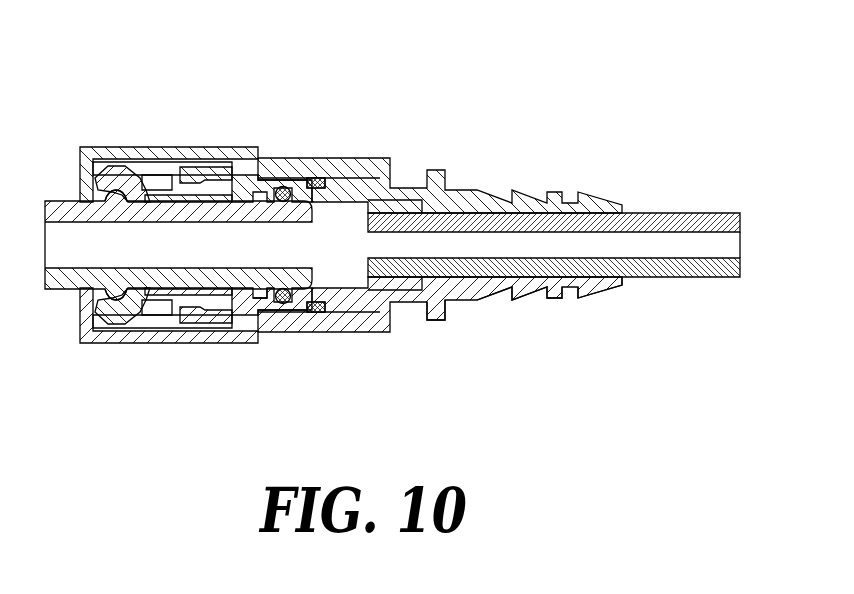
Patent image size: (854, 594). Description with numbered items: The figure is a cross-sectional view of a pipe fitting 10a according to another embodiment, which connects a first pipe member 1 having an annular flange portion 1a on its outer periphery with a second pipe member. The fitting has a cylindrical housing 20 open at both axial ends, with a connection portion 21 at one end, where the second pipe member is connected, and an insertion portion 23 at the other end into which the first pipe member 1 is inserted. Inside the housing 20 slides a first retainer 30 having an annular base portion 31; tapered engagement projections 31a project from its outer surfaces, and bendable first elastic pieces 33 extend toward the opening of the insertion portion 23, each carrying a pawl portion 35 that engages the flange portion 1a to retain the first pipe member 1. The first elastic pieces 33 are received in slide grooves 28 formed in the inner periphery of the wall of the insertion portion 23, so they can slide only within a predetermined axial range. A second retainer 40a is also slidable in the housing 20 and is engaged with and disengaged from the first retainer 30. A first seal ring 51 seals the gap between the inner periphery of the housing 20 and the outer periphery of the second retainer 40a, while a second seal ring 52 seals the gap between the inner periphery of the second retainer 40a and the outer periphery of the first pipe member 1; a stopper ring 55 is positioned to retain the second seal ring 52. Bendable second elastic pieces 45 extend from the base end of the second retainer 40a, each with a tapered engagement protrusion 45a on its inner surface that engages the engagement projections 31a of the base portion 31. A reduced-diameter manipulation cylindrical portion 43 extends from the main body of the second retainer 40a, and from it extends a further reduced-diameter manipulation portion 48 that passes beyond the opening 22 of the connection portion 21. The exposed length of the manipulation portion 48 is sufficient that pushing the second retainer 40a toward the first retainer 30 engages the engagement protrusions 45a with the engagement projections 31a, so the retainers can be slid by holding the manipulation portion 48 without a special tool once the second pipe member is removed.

The first pipe member 1 is at (53, 200).
The flange portion 1a is at (131, 147).
The pipe fitting 10a is at (290, 152).
The housing 20 is at (393, 156).
The connection portion 21 is at (533, 300).
The opening 22 is at (614, 288).
The insertion portion 23 is at (80, 290).
The slide groove 28 is at (106, 318).
The first retainer 30 is at (98, 325).
The base portion 31 is at (213, 343).
The engagement projection 31a is at (203, 147).
The first elastic piece 33 is at (172, 147).
The pawl portion 35 is at (108, 147).
The second retainer 40a is at (348, 157).
The manipulation cylindrical portion 43 is at (410, 304).
The second elastic piece 45 is at (247, 147).
The engagement protrusion 45a is at (230, 147).
The manipulation portion 48 is at (645, 212).
The first seal ring 51 is at (316, 315).
The second seal ring 52 is at (286, 305).
The stopper ring 55 is at (265, 312).